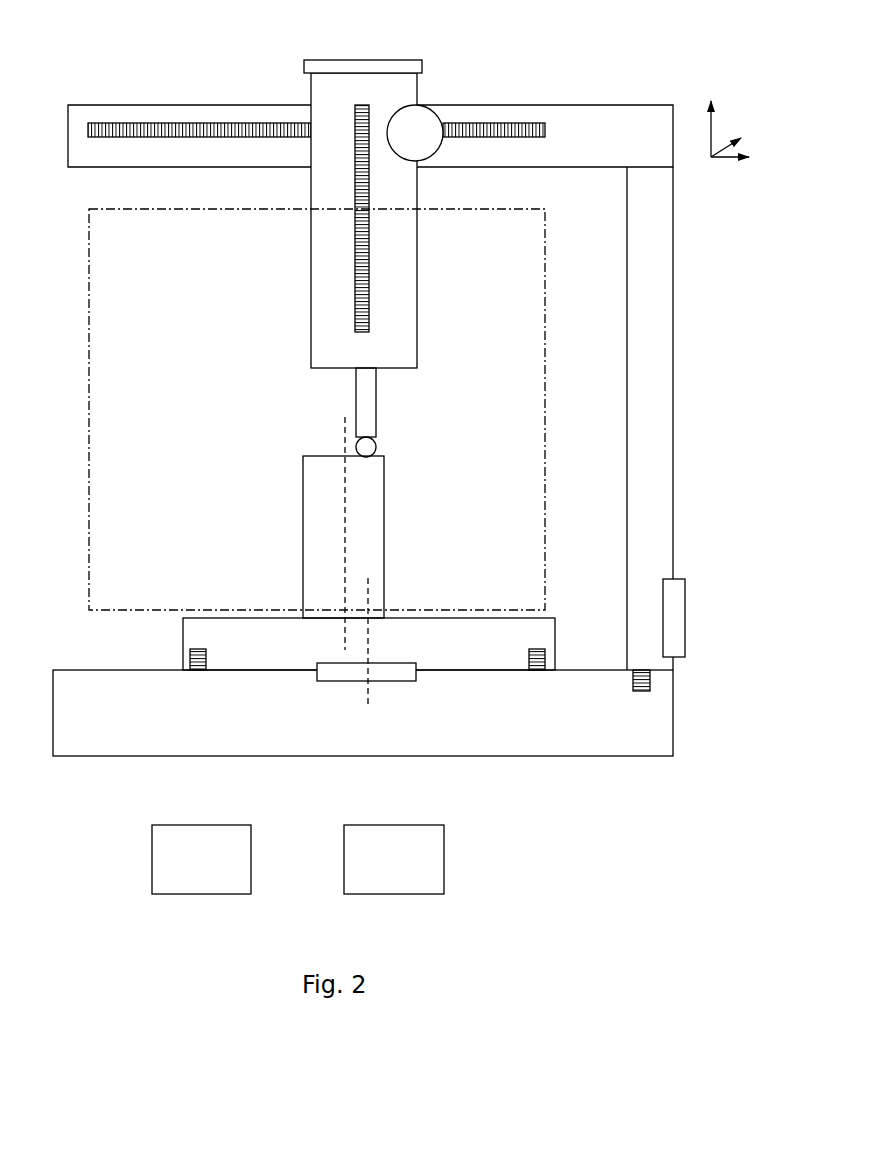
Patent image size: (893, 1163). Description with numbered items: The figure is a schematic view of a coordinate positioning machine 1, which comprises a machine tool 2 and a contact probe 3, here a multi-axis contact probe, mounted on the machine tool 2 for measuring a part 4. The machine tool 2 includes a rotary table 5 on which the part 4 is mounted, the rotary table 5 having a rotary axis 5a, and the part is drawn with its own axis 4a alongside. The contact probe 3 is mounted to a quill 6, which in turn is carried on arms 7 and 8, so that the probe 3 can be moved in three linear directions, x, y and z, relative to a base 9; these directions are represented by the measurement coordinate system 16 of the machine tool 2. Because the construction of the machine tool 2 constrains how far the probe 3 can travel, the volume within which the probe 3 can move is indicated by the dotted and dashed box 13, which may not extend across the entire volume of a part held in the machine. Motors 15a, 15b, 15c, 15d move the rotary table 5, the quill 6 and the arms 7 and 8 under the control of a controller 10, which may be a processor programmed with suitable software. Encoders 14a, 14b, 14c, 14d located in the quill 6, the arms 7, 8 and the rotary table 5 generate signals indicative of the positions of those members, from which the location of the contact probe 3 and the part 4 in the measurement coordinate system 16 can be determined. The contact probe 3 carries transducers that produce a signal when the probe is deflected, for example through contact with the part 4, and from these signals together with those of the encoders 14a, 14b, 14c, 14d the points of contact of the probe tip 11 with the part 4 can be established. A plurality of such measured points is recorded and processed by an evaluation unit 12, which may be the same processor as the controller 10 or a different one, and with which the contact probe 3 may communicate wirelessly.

The coordinate positioning machine 1 is at (256, 342).
The machine tool 2 is at (192, 104).
The contact probe 3 is at (374, 395).
The part 4 is at (384, 518).
The workpiece axis 4a is at (343, 636).
The rotary table 5 is at (222, 618).
The rotary axis 5a is at (371, 687).
The quill 6 is at (387, 297).
The arm 7 is at (627, 104).
The arm 8 is at (653, 403).
The base 9 is at (586, 758).
The controller 10 is at (214, 870).
The probe tip 11 is at (379, 444).
The evaluation unit 12 is at (407, 870).
The dotted and dashed box 13 is at (547, 282).
The encoder 14a is at (366, 252).
The encoder 14b is at (142, 125).
The encoder 14c is at (646, 683).
The encoder 14d is at (188, 660).
The motor 15a is at (397, 59).
The motor 15b is at (431, 122).
The motor 15c is at (680, 605).
The motor 15d is at (337, 682).
The measurement coordinate system 16 is at (726, 98).